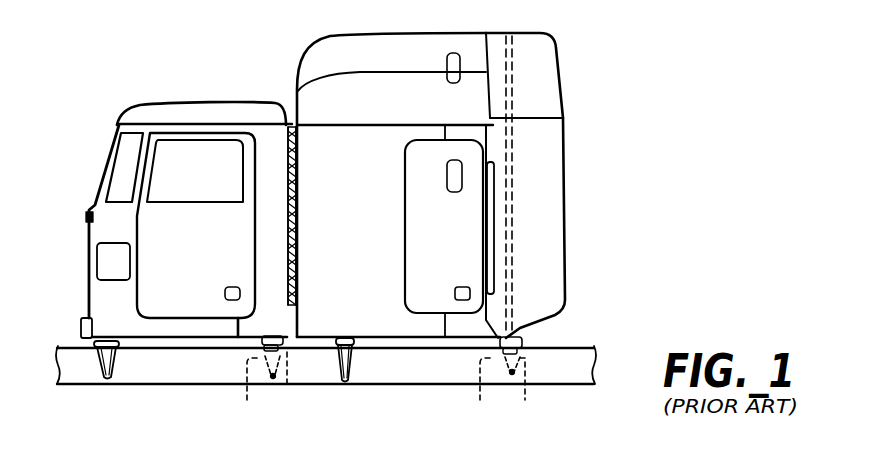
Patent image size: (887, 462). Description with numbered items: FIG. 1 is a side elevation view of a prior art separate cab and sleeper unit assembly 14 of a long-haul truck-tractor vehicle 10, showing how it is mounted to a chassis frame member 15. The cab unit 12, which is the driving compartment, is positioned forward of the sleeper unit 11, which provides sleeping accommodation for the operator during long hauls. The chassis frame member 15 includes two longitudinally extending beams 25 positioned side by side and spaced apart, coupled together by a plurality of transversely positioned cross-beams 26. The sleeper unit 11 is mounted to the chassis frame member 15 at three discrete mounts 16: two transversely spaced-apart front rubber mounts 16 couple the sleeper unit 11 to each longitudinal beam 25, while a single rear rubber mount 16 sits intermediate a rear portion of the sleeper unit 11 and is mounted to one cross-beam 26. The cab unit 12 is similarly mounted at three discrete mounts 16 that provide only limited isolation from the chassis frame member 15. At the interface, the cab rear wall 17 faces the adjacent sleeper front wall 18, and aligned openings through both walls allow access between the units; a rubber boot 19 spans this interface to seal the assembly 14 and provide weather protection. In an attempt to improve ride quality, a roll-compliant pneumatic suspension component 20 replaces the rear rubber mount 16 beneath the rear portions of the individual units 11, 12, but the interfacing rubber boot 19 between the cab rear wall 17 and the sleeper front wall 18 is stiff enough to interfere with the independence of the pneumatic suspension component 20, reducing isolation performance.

The truck-tractor vehicle 10 is at (643, 90).
The sleeper unit 11 is at (458, 24).
The cab unit 12 is at (196, 92).
The separate cab and sleeper unit assembly 14 is at (86, 86).
The chassis frame member 15 is at (566, 336).
The mounts 16 is at (100, 365).
The cab rear wall 17 is at (297, 137).
The sleeper front wall 18 is at (293, 160).
The rubber boot 19 is at (288, 128).
The pneumatic suspension component 20 is at (275, 382).
The longitudinal beams 25 is at (245, 400).
The cross-beams 26 is at (481, 407).